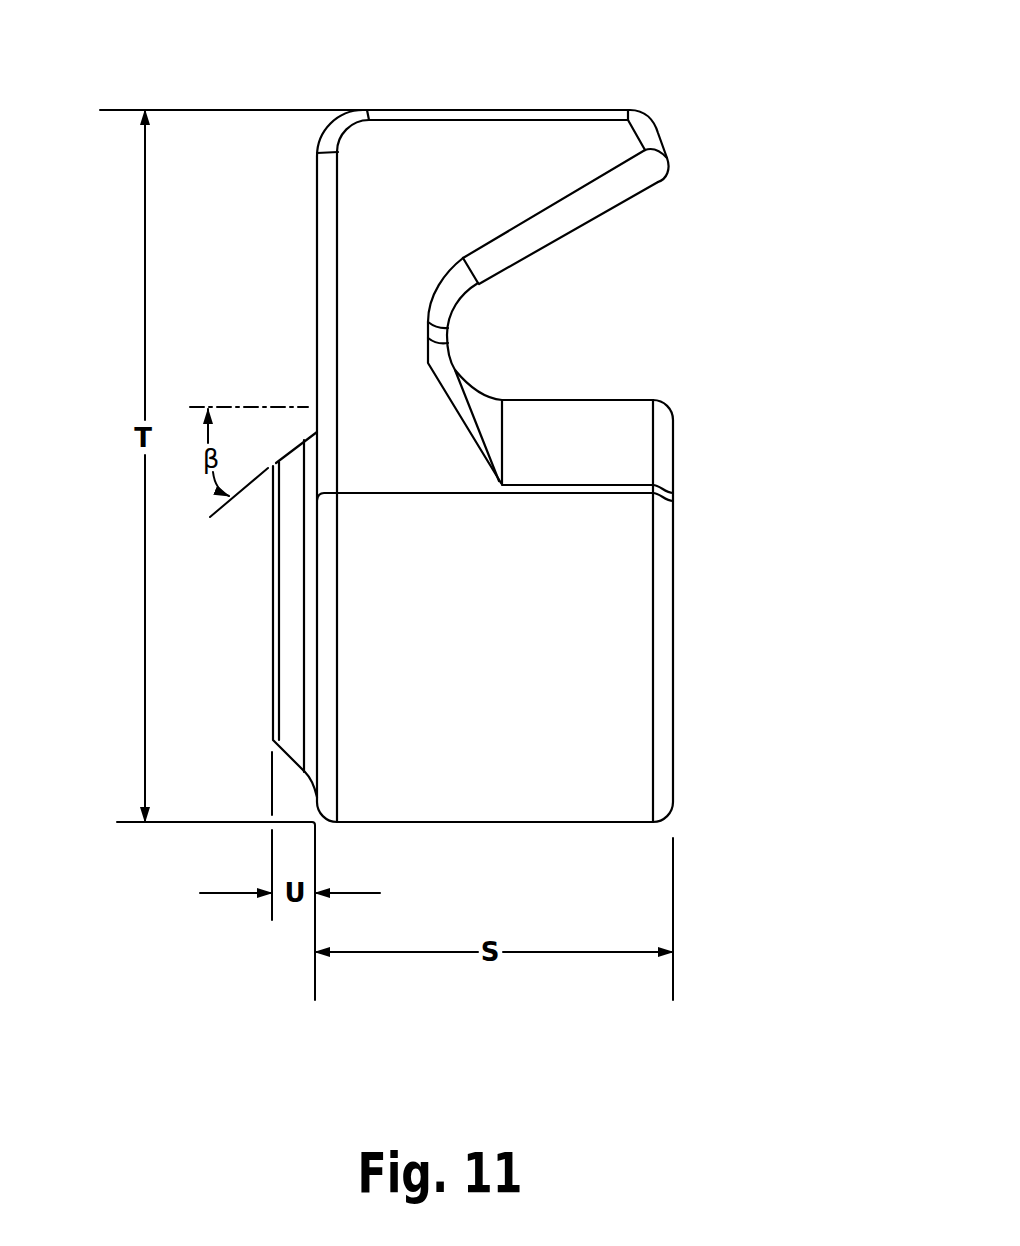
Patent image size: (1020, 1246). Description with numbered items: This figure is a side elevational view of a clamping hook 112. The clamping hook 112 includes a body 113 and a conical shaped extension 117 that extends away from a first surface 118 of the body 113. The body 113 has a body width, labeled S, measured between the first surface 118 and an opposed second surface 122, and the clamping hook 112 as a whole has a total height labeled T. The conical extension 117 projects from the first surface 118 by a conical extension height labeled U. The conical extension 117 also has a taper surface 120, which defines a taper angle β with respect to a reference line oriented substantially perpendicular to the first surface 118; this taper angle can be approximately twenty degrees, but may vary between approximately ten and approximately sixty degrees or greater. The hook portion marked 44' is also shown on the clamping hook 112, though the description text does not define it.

The clamping hook 112 is at (563, 93).
The first surface 118 is at (315, 253).
The taper surface 120 is at (297, 440).
The conical shaped extension 117 is at (290, 630).
The hook portion 44' is at (543, 316).
The body 113 is at (618, 600).
The second surface 122 is at (673, 647).